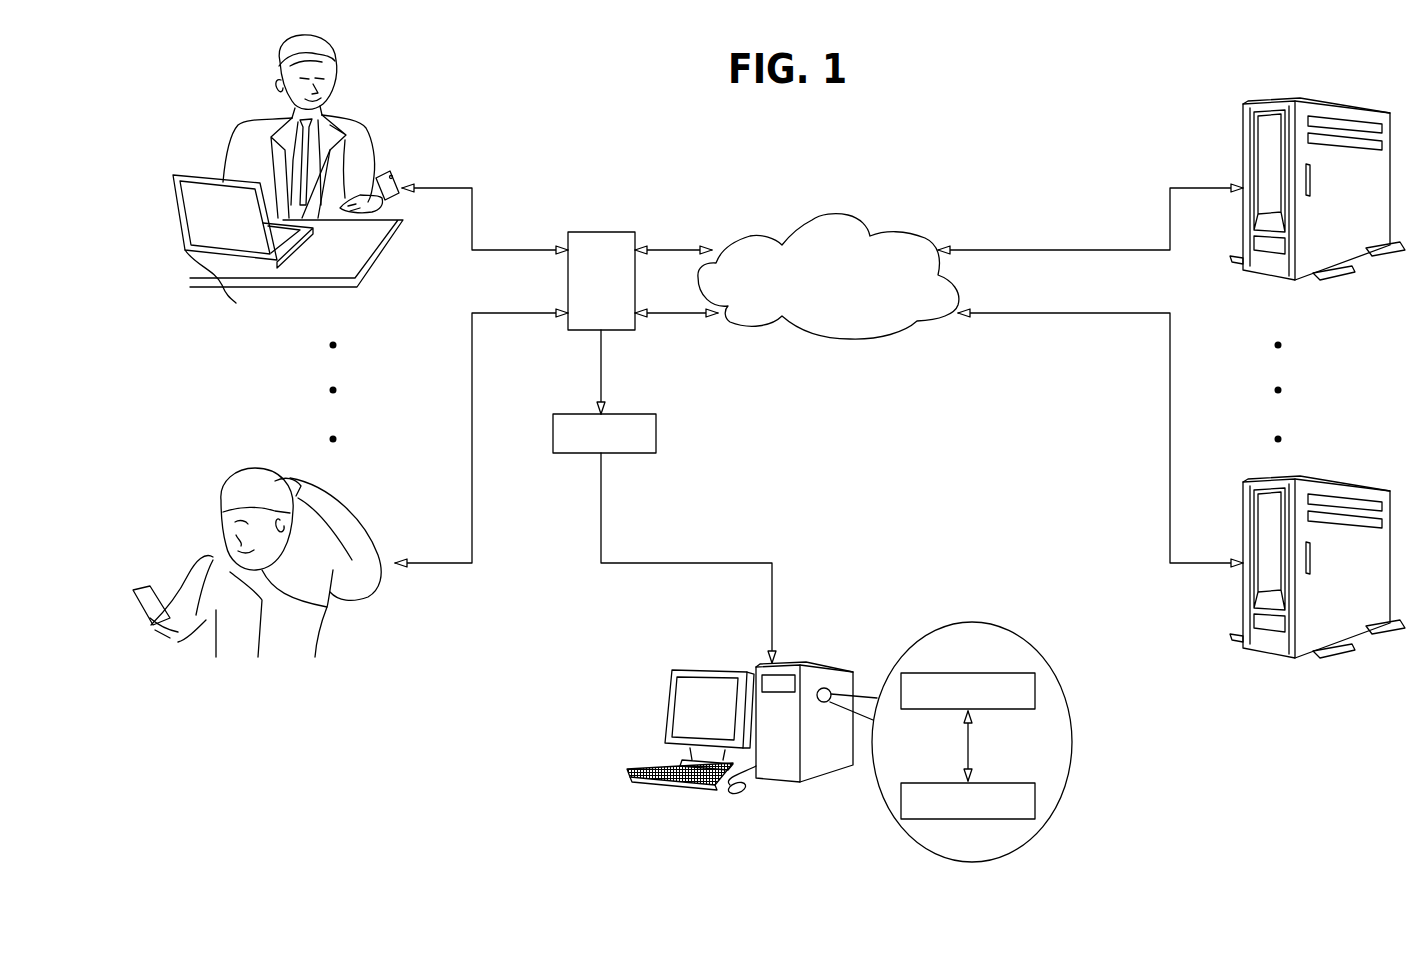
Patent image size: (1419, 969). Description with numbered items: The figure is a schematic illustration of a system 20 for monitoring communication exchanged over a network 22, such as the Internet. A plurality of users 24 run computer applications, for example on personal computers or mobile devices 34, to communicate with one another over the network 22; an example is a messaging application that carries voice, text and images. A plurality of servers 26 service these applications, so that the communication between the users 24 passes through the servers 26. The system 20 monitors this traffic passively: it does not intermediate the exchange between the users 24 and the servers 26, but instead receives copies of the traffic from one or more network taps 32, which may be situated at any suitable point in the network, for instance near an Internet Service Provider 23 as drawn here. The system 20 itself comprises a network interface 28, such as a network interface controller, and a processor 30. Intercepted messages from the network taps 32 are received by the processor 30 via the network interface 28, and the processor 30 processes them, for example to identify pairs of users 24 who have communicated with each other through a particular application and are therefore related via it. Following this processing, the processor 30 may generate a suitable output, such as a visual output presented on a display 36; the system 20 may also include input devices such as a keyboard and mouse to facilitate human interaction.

The system 20 is at (683, 640).
The network 22 is at (756, 236).
The Internet Service Provider 23 is at (604, 232).
The users 24 is at (262, 110).
The servers 26 is at (1243, 108).
The network interface 28 is at (990, 673).
The processor 30 is at (1022, 783).
The network taps 32 is at (570, 414).
The mobile devices 34 is at (393, 178).
The display 36 is at (672, 688).